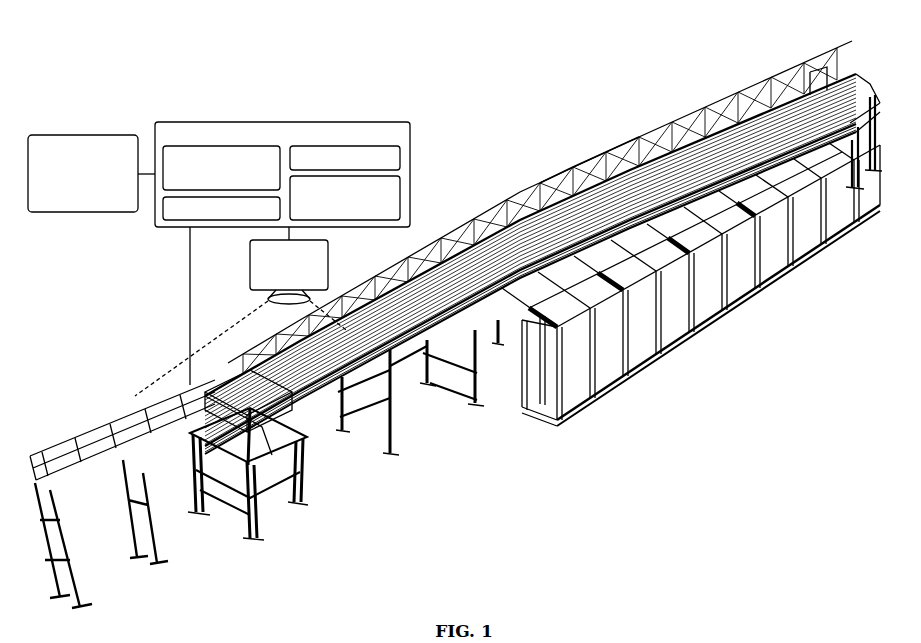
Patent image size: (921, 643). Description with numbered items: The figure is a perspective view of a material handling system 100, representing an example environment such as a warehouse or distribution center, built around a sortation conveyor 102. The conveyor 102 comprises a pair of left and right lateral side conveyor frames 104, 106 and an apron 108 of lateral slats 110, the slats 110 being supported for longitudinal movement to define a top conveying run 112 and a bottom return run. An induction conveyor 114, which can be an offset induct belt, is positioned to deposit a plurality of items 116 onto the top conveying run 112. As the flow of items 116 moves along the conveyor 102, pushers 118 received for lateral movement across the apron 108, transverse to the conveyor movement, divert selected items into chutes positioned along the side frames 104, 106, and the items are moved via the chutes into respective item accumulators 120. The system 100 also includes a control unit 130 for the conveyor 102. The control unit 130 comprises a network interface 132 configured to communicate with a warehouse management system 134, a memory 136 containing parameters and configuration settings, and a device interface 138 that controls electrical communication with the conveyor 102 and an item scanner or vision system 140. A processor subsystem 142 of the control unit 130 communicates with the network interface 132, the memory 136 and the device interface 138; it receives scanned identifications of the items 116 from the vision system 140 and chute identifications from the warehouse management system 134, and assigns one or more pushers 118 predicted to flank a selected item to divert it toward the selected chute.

The material handling system 100 is at (50, 75).
The conveyor 102 is at (758, 100).
The left lateral side conveyor frame 104 is at (352, 302).
The right lateral side conveyor frame 106 is at (421, 385).
The apron 108 is at (373, 382).
The lateral slats 110 is at (300, 505).
The top conveying run 112 is at (552, 187).
The induction conveyor 114 is at (48, 446).
The items 116 is at (546, 330).
The pusher 118 is at (236, 374).
The item accumulators 120 is at (703, 298).
The control unit 130 is at (263, 122).
The network interface 132 is at (221, 168).
The warehouse management system 134 is at (85, 135).
The memory 136 is at (345, 158).
The device interface 138 is at (345, 198).
The vision system 140 is at (240, 318).
The processor subsystem 142 is at (221, 208).